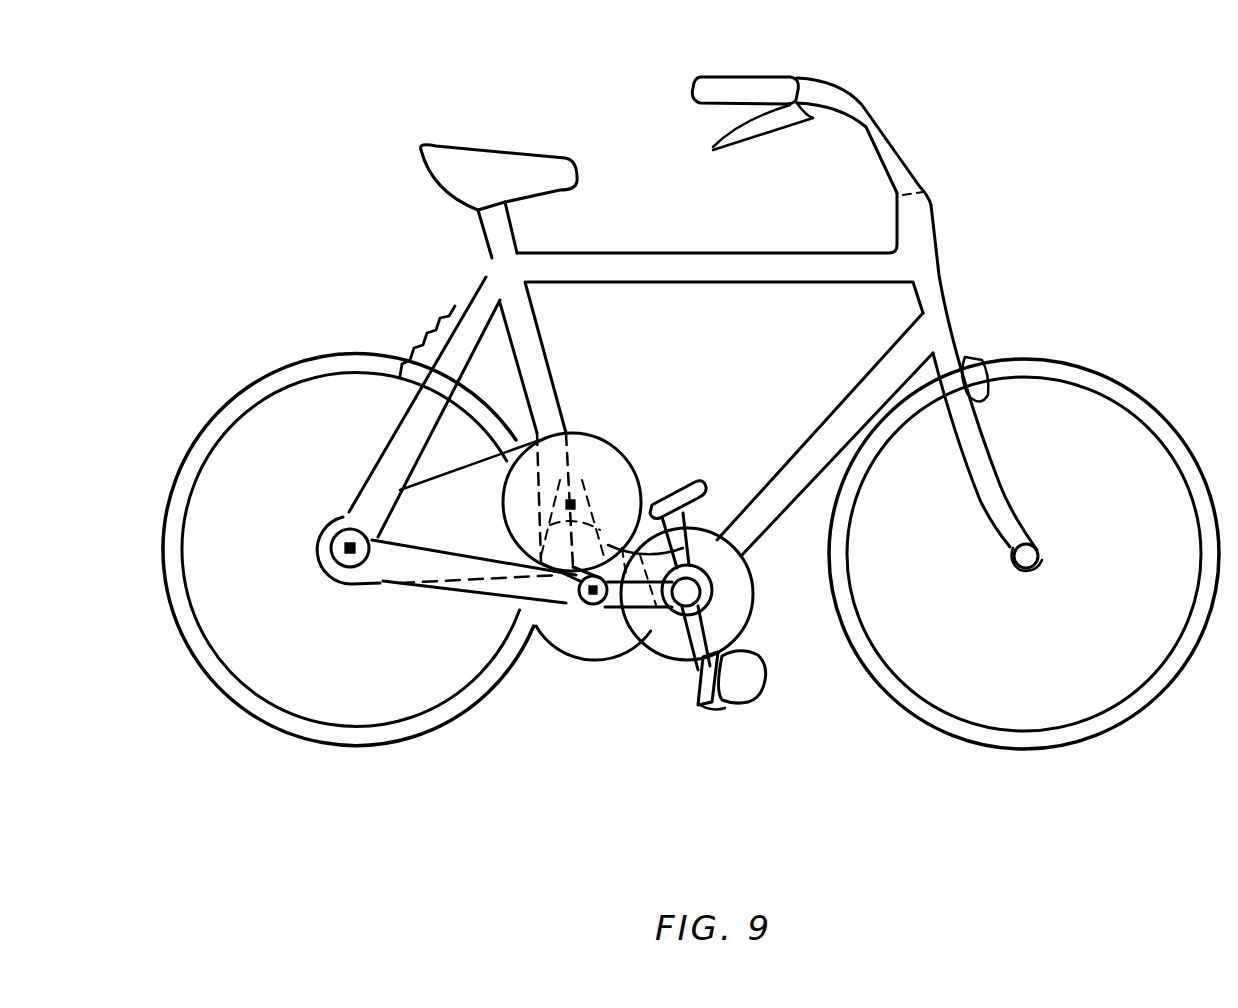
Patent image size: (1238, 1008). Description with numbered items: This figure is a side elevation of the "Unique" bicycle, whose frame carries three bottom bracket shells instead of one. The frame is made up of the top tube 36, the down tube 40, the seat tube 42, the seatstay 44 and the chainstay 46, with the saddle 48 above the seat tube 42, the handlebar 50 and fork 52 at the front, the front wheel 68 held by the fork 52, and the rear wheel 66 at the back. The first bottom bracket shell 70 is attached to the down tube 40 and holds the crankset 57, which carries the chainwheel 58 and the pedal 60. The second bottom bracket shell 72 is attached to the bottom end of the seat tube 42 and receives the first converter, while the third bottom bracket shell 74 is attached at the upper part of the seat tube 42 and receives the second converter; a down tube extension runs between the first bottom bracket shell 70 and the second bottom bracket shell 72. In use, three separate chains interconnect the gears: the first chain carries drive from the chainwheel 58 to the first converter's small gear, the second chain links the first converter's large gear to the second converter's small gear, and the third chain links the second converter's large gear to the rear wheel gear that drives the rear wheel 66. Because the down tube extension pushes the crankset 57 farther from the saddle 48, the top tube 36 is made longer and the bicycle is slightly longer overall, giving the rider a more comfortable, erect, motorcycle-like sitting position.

The top tube 36 is at (677, 252).
The down tube 40 is at (832, 413).
The seat tube 42 is at (550, 383).
The seatstay 44 is at (397, 437).
The chainstay 46 is at (440, 583).
The saddle 48 is at (517, 157).
The handlebar 50 is at (745, 77).
The fork 52 is at (988, 467).
The crankset 57 is at (700, 600).
The chainwheel 58 is at (708, 530).
The pedal 60 is at (672, 527).
The rear wheel 66 is at (327, 748).
The front wheel 68 is at (1042, 748).
The first bottom bracket shell for crankset 70 is at (678, 625).
The second bottom bracket shell for first converter 72 is at (593, 612).
The third bottom bracket shell for second converter 74 is at (574, 502).